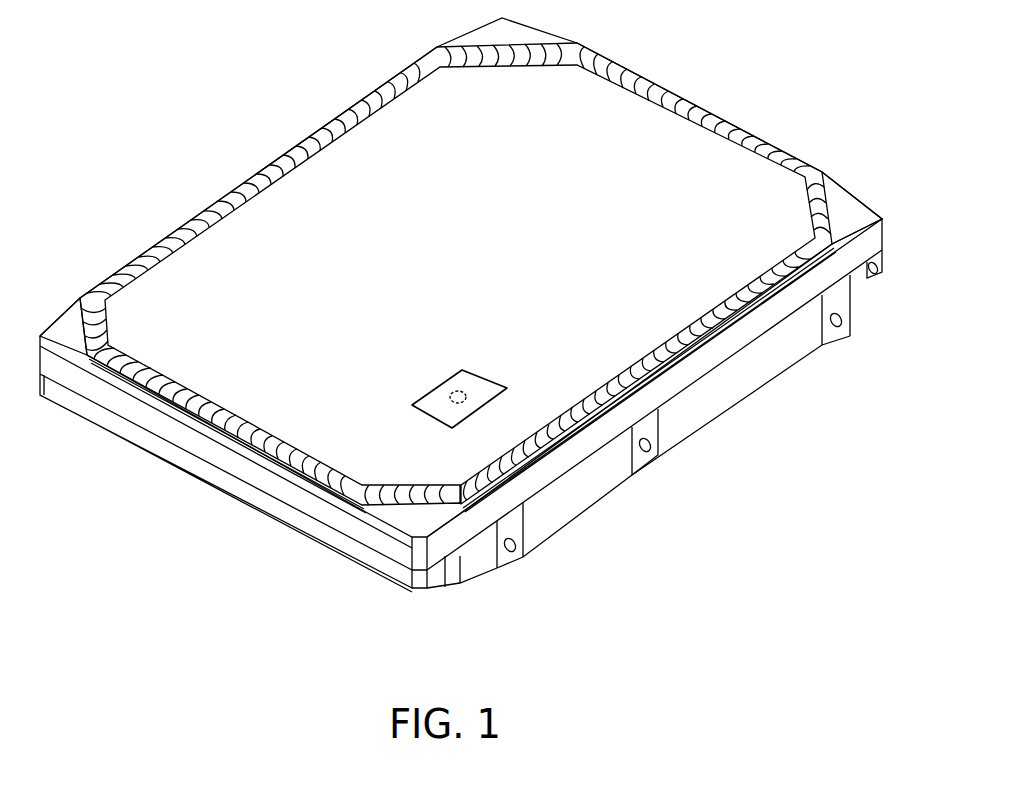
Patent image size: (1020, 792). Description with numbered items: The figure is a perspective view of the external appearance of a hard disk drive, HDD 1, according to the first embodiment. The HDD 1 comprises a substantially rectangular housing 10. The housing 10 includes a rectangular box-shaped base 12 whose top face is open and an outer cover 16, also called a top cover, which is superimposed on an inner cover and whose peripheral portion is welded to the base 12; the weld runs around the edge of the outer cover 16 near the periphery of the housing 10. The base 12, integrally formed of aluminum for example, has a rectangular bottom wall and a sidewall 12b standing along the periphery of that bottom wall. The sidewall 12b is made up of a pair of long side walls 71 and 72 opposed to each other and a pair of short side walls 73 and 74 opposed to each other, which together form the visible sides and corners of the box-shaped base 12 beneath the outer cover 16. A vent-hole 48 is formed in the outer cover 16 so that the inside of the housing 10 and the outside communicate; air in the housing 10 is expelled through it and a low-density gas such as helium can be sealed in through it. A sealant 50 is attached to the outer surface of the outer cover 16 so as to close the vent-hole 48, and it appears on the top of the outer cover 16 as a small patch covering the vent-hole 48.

The hard disk drive 1 is at (745, 93).
The housing 10 is at (277, 111).
The base 12 is at (705, 404).
The sidewall 12b is at (573, 505).
The outer cover 16 is at (633, 124).
The vent-hole 48 is at (448, 406).
The sealant 50 is at (478, 380).
The long side wall 71 is at (760, 380).
The long side wall 72 is at (65, 336).
The short side wall 73 is at (288, 512).
The short side wall 74 is at (851, 217).